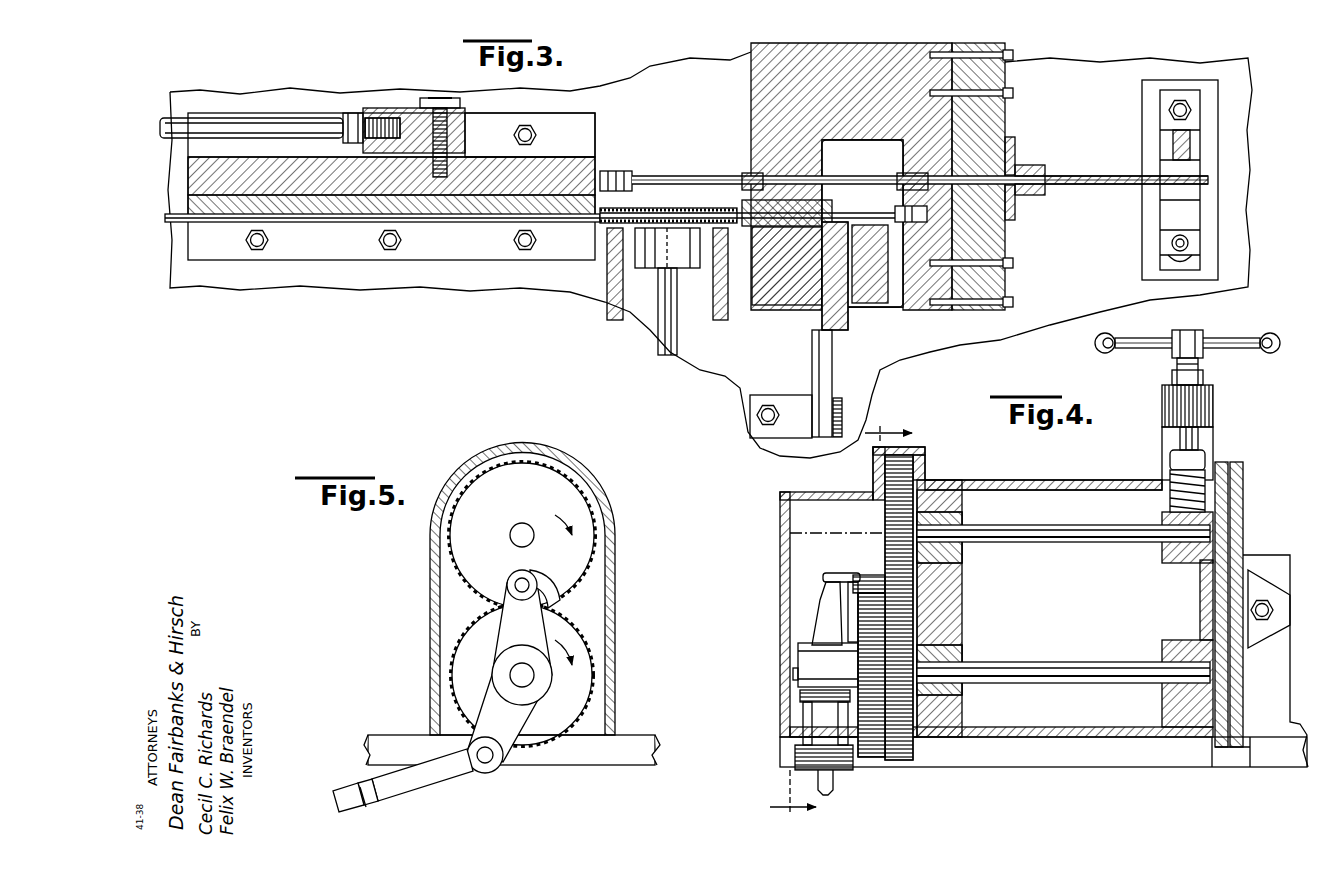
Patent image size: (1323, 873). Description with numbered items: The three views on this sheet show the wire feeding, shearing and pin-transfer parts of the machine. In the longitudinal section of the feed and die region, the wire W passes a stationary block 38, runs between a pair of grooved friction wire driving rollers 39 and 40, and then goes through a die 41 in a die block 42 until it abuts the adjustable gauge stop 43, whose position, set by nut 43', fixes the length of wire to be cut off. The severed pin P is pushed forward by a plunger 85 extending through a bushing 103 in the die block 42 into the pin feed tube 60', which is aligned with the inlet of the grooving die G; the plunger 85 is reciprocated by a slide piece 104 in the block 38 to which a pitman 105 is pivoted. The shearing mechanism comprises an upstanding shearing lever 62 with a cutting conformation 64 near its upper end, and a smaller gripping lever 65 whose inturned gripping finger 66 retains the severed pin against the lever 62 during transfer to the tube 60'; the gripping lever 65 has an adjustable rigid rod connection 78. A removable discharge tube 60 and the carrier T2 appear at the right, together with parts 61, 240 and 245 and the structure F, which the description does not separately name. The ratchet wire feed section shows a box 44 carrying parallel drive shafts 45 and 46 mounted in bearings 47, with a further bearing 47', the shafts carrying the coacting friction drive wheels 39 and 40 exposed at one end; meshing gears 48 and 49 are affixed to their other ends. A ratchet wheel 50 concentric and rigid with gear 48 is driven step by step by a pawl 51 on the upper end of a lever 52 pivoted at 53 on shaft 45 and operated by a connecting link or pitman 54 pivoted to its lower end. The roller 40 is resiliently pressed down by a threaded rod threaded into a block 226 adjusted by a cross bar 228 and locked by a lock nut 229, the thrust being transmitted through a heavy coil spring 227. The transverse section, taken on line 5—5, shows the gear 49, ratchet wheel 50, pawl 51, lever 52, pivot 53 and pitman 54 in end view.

In FIG. 3, the stationary block 38 is at (318, 198).
In FIG. 4, the stationary block 38 is at (1267, 563).
In FIG. 4, the grooved friction wire driving roller 39 is at (1243, 688).
In FIG. 4, the grooved friction wire driving roller 40 is at (1247, 523).
In FIG. 3, the die 41 is at (783, 228).
In FIG. 3, the die block 42 is at (753, 158).
In FIG. 3, the adjustable gauge stop 43 is at (750, 207).
In FIG. 3, the nut 43' is at (899, 204).
In FIG. 4, the box 44 is at (1100, 740).
In FIG. 4, the drive shaft 45 is at (1080, 661).
In FIG. 4, the drive shaft 46 is at (1082, 545).
In FIG. 4, the bearing 47 is at (963, 603).
In FIG. 4, the bearing 47' is at (1180, 619).
In FIG. 4, the gear 48 is at (910, 628).
In FIG. 4, the gear 49 is at (912, 468).
In FIG. 5, the gear 49 is at (576, 506).
In FIG. 4, the ratchet wheel 50 is at (876, 760).
In FIG. 5, the ratchet wheel 50 is at (580, 659).
In FIG. 4, the pawl 51 is at (870, 590).
In FIG. 5, the pawl 51 is at (546, 590).
In FIG. 4, the lever 52 is at (818, 600).
In FIG. 5, the lever 52 is at (530, 623).
In FIG. 4, the pivot 53 is at (797, 663).
In FIG. 5, the pivot 53 is at (527, 680).
In FIG. 4, the connecting link or pitman 54 is at (826, 793).
In FIG. 5, the connecting link or pitman 54 is at (343, 795).
In FIG. 4, the section line 5— 5 is at (841, 620).
In FIG. 3, the discharge tube 60 is at (1126, 163).
In FIG. 3, the pin feed tube 60' is at (901, 169).
In FIG. 3, the rod end 61 is at (1097, 186).
In FIG. 3, the shearing lever 62 is at (847, 314).
In FIG. 3, the cutting conformation 64 is at (822, 250).
In FIG. 3, the gripping lever 65 is at (820, 362).
In FIG. 3, the inturned gripping finger 66 is at (826, 204).
In FIG. 3, the adjustable rigid rod connection 78 is at (762, 427).
In FIG. 3, the plunger 85 is at (668, 178).
In FIG. 3, the bushing 103 is at (779, 170).
In FIG. 3, the slide piece 104 is at (548, 168).
In FIG. 4, the slide piece 104 is at (1272, 633).
In FIG. 3, the pitman 105 is at (292, 127).
In FIG. 4, the block 226 is at (1216, 403).
In FIG. 4, the heavy coil spring 227 is at (1173, 500).
In FIG. 4, the cross bar 228 is at (1242, 339).
In FIG. 4, the lock nut 229 is at (1205, 378).
In FIG. 4, the plunger 240 is at (1180, 451).
In FIG. 4, the pin 245 is at (1216, 435).
In FIG. 4, the frame F is at (777, 550).
In FIG. 3, the grooving die G is at (1008, 124).
In FIG. 3, the severed pin P is at (1033, 196).
In FIG. 3, the carrier T2 is at (1223, 207).
In FIG. 3, the wire W is at (472, 203).
In FIG. 4, the wire W is at (1217, 614).